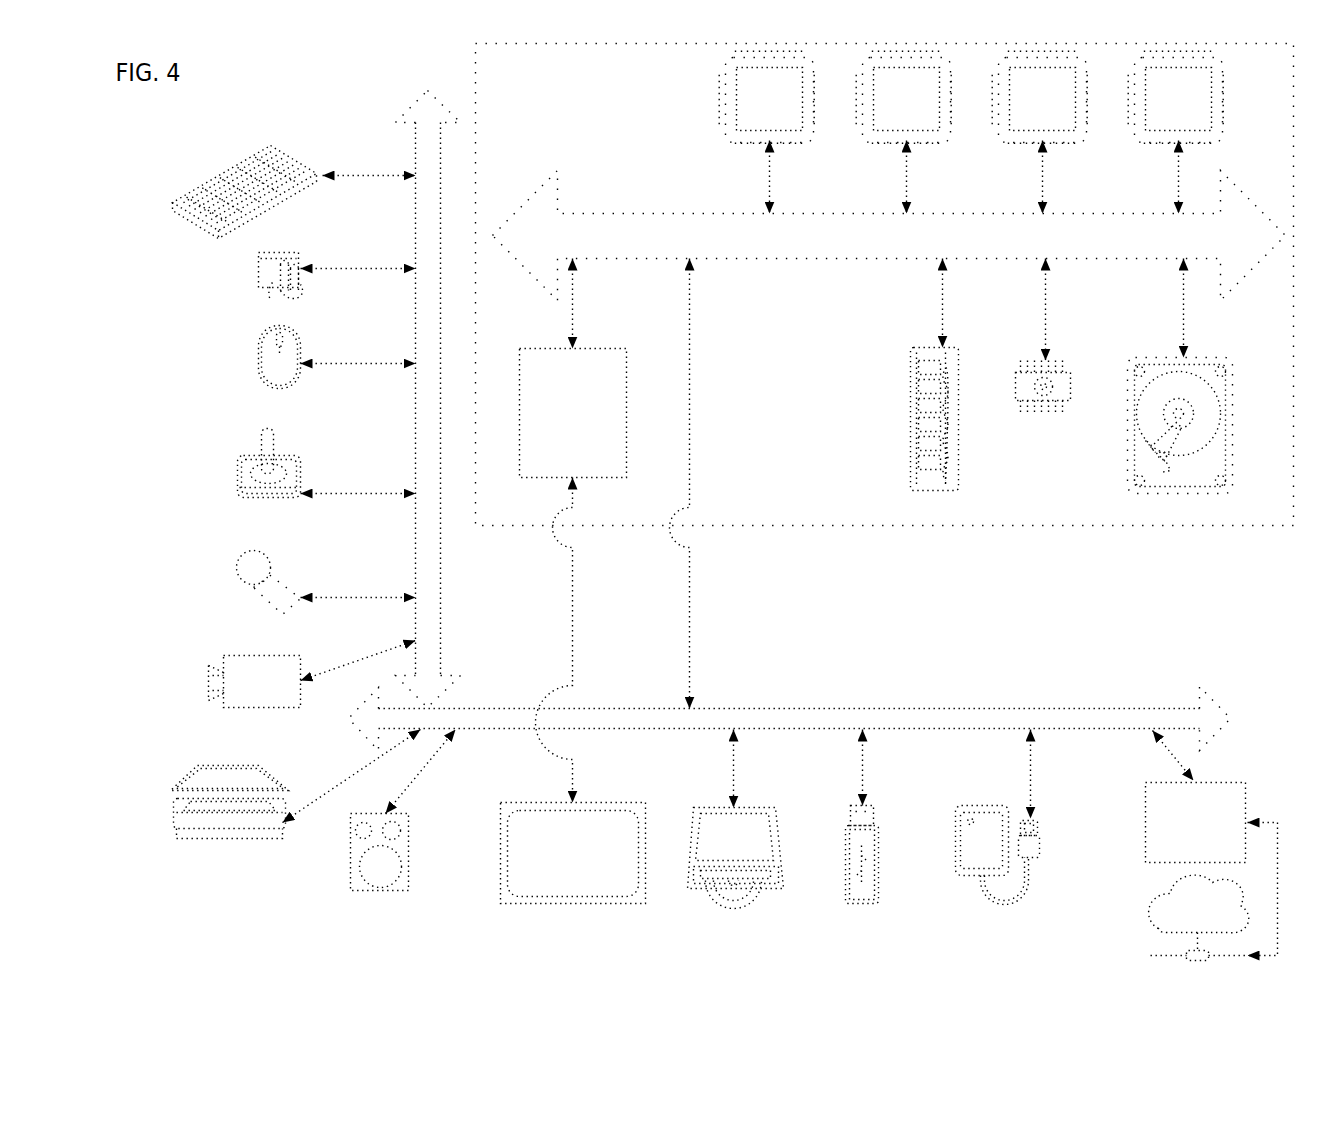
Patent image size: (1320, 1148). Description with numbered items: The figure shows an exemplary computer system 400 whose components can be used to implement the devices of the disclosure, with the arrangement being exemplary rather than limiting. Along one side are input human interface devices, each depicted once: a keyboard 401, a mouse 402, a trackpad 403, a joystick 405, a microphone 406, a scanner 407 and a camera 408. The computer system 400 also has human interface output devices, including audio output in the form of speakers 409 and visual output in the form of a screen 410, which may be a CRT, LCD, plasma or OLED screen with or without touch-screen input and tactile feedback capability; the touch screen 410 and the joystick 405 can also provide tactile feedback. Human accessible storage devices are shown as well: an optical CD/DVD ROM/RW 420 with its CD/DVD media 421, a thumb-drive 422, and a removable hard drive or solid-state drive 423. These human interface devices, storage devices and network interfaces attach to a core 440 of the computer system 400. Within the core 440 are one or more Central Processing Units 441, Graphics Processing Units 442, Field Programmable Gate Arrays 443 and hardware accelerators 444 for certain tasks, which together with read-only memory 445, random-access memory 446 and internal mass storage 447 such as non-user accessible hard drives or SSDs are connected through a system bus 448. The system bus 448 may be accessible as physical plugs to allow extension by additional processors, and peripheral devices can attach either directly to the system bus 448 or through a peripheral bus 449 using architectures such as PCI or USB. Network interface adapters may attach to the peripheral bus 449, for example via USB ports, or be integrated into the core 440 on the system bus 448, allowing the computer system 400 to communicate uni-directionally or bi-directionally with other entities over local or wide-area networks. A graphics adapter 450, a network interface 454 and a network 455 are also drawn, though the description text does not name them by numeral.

The computer system 400 is at (203, 140).
The keyboard 401 is at (172, 205).
The mouse 402 is at (248, 357).
The trackpad 403 is at (248, 280).
The joystick 405 is at (238, 491).
The microphone 406 is at (237, 570).
The scanner 407 is at (175, 828).
The camera 408 is at (210, 683).
The speakers 409 is at (378, 890).
The touch screen 410 is at (570, 905).
The CD/DVD ROM/RW 420 is at (775, 890).
The CD/DVD media 421 is at (720, 895).
The thumb-drive 422 is at (860, 905).
The removable hard drive or solid-state drive 423 is at (958, 878).
The core 440 is at (876, 527).
The Central Processing Unit (CPU) 441 is at (770, 100).
The Graphics Processing Unit (GPU) 442 is at (907, 100).
The Field Programmable Gate Array (FPGA) 443 is at (1043, 100).
The hardware accelerators 444 is at (1179, 100).
The Read-only memory (ROM) 445 is at (1035, 412).
The Random-access memory 446 is at (910, 412).
The internal mass storage 447 is at (1143, 358).
The system bus 448 is at (889, 236).
The peripheral bus 449 is at (415, 122).
The graphics adapter 450 is at (573, 576).
The network interface 454 is at (1196, 797).
The network 455 is at (1150, 925).